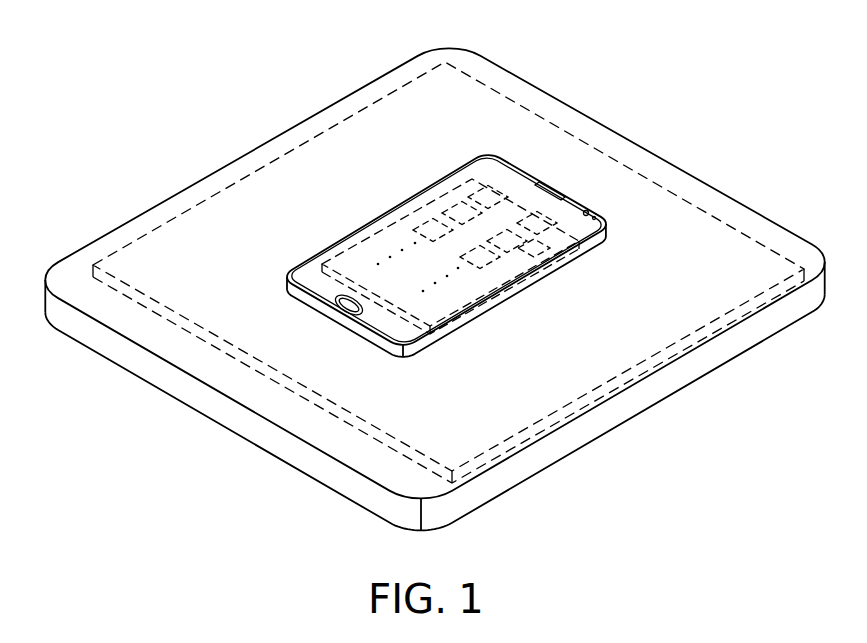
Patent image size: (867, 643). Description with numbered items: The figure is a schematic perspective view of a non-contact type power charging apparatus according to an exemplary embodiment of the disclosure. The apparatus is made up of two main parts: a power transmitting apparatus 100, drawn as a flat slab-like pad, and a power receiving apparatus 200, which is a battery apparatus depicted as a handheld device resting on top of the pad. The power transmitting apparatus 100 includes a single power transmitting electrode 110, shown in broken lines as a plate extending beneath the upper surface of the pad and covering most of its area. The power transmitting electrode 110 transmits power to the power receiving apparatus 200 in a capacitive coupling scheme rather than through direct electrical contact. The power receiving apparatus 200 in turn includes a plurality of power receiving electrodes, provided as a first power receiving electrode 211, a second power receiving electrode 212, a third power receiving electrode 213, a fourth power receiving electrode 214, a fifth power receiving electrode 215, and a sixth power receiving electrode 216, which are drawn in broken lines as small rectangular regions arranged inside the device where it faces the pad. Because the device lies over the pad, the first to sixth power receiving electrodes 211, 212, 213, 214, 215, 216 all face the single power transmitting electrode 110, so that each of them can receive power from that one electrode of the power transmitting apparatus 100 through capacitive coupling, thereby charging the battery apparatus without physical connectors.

The power transmitting apparatus 100 is at (292, 113).
The power transmitting electrode 110 is at (222, 200).
The power receiving apparatus 200 is at (588, 186).
The first power receiving electrode 211 is at (484, 195).
The second power receiving electrode 212 is at (535, 220).
The third power receiving electrode 213 is at (460, 211).
The fourth power receiving electrode 214 is at (548, 250).
The fifth power receiving electrode 215 is at (430, 224).
The sixth power receiving electrode 216 is at (514, 266).